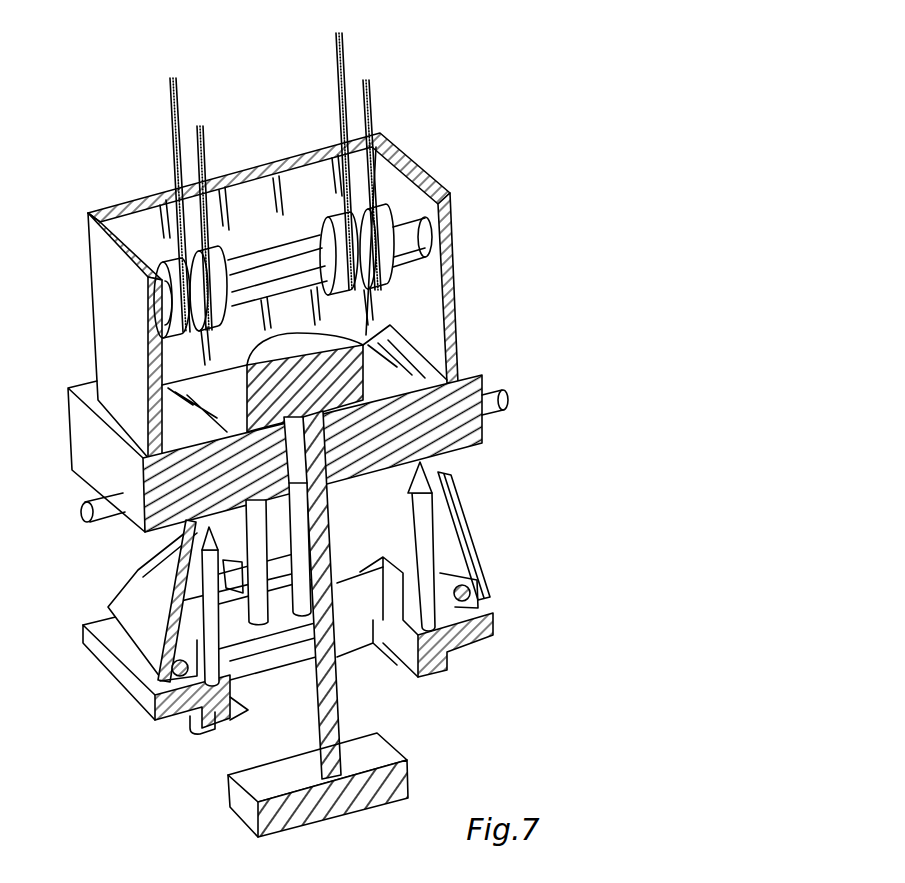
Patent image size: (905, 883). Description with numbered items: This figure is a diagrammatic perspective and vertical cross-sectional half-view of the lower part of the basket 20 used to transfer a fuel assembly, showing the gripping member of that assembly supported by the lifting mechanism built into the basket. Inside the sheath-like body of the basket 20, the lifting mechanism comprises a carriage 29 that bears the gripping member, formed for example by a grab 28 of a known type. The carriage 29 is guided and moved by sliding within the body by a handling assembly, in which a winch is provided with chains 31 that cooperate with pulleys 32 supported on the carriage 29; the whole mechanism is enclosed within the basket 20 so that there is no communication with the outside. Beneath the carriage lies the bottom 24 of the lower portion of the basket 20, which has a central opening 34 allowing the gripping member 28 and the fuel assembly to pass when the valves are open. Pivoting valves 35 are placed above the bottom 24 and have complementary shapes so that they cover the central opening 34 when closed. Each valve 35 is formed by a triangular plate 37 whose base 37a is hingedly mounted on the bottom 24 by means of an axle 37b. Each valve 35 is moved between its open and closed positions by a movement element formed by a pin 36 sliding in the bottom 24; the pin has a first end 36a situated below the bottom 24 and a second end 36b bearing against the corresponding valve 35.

The basket 20 is at (455, 182).
The bottom 24 is at (182, 722).
The gripping member 28 is at (405, 790).
The carriage 29 is at (478, 383).
The chains 31 is at (175, 90).
The pulleys 32 is at (218, 258).
The central opening 34 is at (294, 690).
The valves 35 is at (131, 627).
The pin 36 is at (296, 540).
The first end 36a is at (218, 733).
The second end 36b is at (448, 470).
The triangular plate 37 is at (122, 607).
The base 37a is at (160, 664).
The axle 37b is at (175, 695).